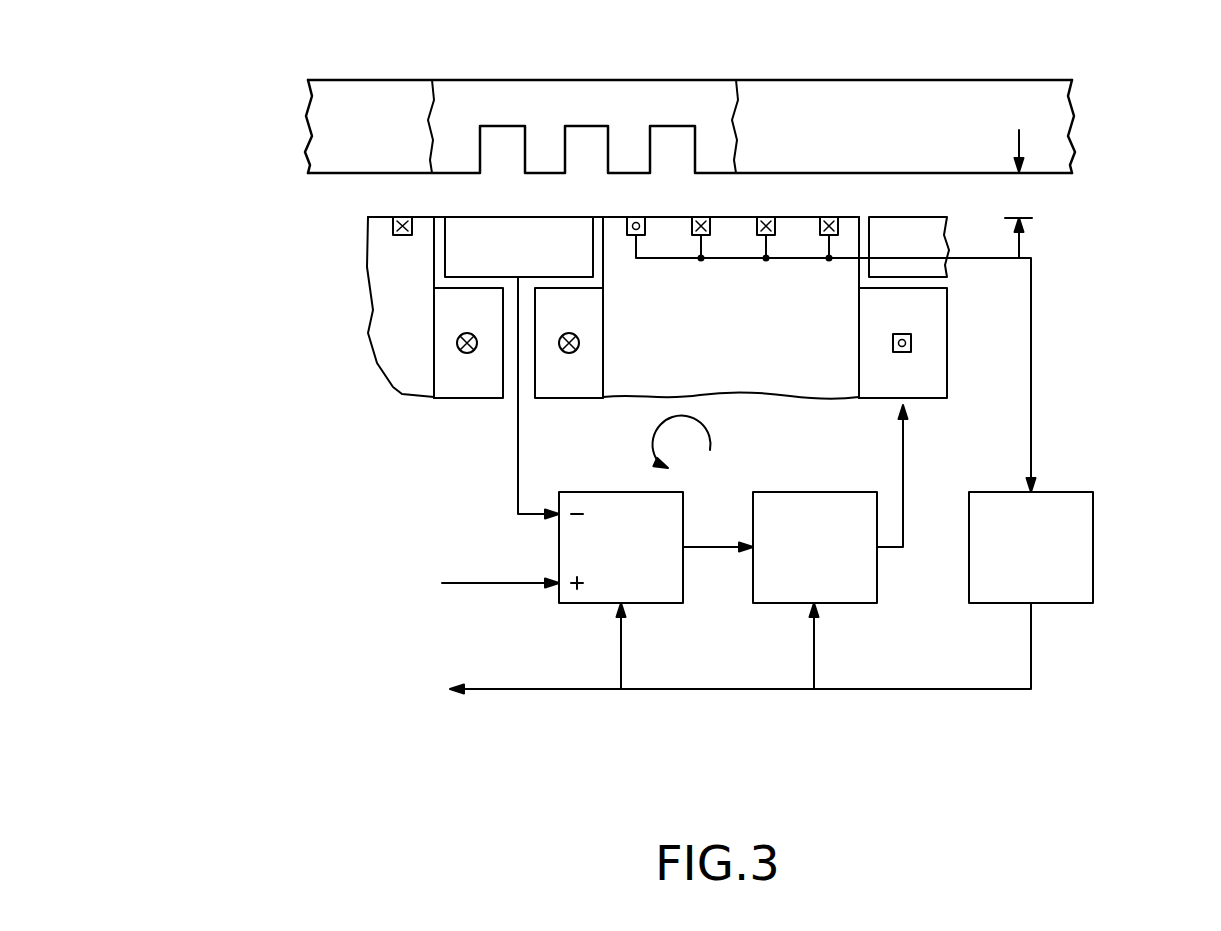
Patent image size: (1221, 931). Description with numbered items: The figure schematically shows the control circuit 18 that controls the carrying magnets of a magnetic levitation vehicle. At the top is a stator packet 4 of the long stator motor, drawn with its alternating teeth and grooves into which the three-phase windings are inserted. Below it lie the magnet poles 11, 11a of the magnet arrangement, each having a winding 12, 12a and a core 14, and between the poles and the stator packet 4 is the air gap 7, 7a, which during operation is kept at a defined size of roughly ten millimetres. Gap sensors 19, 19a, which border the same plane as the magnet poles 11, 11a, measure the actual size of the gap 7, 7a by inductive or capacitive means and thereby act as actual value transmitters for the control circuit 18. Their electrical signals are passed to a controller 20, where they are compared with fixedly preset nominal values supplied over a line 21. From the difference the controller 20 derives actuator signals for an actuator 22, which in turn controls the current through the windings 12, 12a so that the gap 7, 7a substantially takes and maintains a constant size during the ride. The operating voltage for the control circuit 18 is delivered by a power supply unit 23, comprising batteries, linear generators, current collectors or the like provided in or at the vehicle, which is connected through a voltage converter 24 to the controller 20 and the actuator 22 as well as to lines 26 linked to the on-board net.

The stator packet 4 is at (930, 100).
The air gap 7 is at (1089, 194).
The air gap 7a is at (1030, 194).
The magnet pole 11 is at (523, 307).
The magnet pole 11a is at (360, 315).
The winding 12 is at (870, 376).
The winding 12a is at (883, 378).
The core 14 is at (650, 378).
The control circuit 18 is at (682, 442).
The gap sensor 19 is at (566, 206).
The gap sensor 19a is at (517, 240).
The controller 20 is at (637, 568).
The line 21 is at (485, 583).
The actuator 22 is at (833, 568).
The power supply unit 23 is at (627, 210).
The voltage converter 24 is at (1053, 568).
The line 26 is at (722, 656).